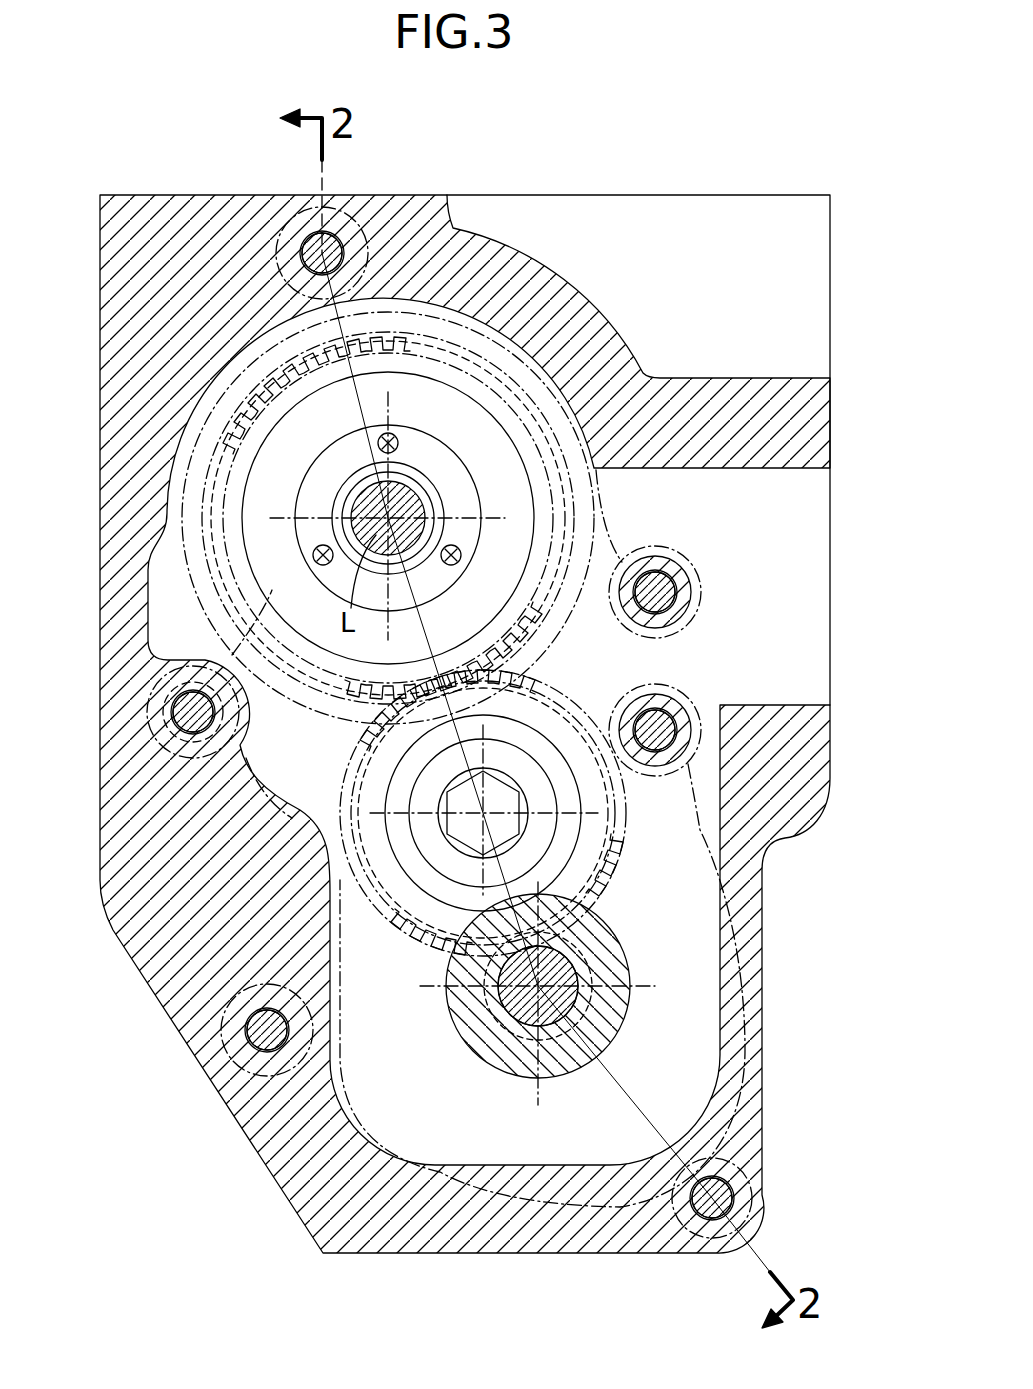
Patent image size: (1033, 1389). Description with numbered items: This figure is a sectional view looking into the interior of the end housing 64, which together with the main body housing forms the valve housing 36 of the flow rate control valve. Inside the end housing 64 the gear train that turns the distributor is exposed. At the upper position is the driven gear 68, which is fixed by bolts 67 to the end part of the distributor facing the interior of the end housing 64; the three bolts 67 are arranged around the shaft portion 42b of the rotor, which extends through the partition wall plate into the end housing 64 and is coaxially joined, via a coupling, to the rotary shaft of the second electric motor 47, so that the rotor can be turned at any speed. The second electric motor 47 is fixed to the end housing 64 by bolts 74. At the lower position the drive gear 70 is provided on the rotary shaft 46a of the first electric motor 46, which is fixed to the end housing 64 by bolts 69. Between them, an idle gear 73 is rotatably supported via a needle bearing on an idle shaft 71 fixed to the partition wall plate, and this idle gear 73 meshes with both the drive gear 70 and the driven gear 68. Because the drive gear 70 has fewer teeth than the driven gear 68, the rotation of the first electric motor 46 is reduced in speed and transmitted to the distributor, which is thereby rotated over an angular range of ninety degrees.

The valve housing 36 is at (599, 180).
The end housing 64 is at (175, 194).
The bolts 74 is at (310, 240).
The second electric motor 47 is at (178, 594).
The bolts 67 is at (396, 436).
The shaft portion 42b is at (372, 495).
The driven gear 68 is at (548, 661).
The bolts 69 is at (662, 712).
The idle shaft 71 is at (410, 792).
The first electric motor 46 is at (693, 812).
The idle gear 73 is at (602, 906).
The drive gear 70 is at (590, 945).
The rotary shaft 46a is at (520, 1000).